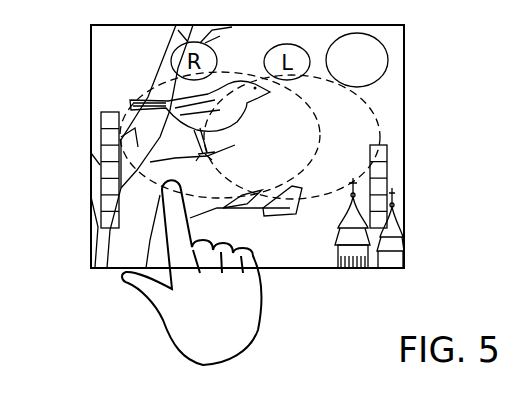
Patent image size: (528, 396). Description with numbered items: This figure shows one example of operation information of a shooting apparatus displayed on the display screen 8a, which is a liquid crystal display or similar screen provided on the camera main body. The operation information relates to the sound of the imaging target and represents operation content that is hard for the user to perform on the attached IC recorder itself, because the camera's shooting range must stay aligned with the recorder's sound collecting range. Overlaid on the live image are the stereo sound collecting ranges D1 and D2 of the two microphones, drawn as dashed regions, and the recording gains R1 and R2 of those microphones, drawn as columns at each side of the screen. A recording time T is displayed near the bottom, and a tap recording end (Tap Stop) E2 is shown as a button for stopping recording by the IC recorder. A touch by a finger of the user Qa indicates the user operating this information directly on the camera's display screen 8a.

The display screen 8a is at (404, 93).
The tap recording end (Tap Stop) E2 is at (388, 52).
The stereo sound collecting range D1 is at (146, 95).
The stereo sound collecting range D2 is at (380, 130).
The recording gain R1 is at (101, 157).
The recording gain R2 is at (387, 170).
The recording time T is at (283, 248).
The touch by a finger of the user Qa is at (247, 330).